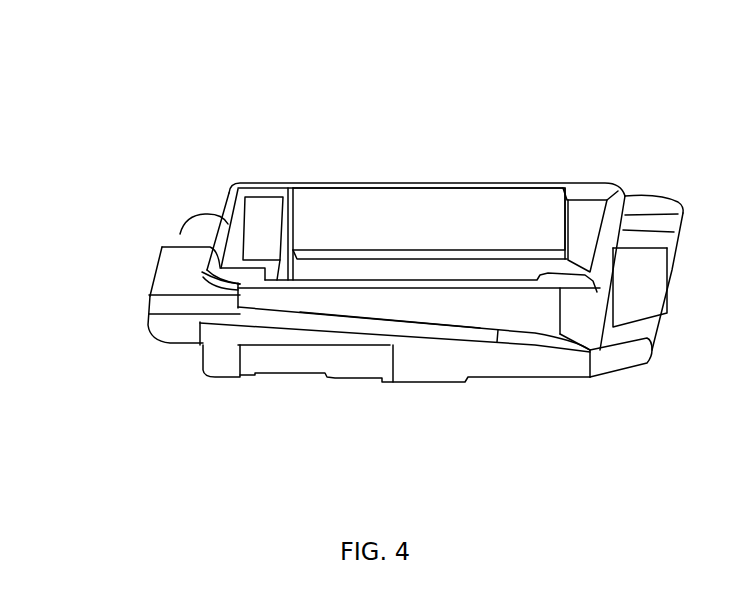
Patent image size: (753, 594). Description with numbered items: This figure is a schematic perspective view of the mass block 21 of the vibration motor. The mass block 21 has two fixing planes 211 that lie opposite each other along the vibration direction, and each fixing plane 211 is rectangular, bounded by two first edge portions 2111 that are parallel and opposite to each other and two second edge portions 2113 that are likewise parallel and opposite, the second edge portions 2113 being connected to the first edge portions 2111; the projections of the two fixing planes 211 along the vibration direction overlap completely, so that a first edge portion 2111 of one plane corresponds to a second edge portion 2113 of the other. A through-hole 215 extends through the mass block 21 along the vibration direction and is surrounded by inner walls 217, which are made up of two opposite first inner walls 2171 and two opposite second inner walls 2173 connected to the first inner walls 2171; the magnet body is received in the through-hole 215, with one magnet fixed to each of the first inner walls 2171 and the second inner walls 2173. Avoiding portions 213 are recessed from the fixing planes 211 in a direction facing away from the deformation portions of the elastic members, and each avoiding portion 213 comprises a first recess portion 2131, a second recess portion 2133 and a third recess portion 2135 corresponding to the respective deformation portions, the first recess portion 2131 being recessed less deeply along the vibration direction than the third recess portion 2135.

The mass block 21 is at (441, 56).
The inner walls 217 is at (171, 123).
The second inner walls 2173 is at (238, 234).
The first inner walls 2171 is at (317, 208).
The through-hole 215 is at (500, 243).
The fixing planes 211 is at (80, 222).
The first edge portions 2111 is at (198, 255).
The second edge portions 2113 is at (255, 290).
The avoiding portions 213 is at (270, 415).
The first recess portion 2131 is at (201, 288).
The second recess portion 2133 is at (428, 316).
The third recess portion 2135 is at (621, 320).